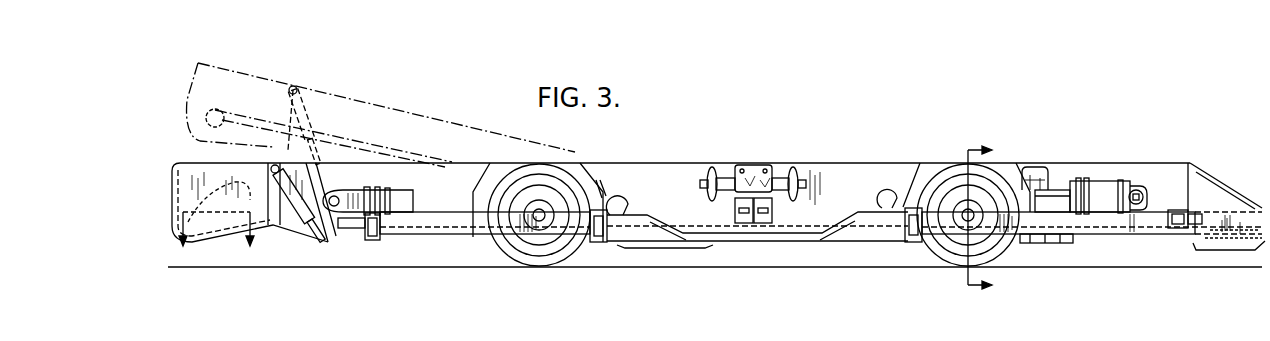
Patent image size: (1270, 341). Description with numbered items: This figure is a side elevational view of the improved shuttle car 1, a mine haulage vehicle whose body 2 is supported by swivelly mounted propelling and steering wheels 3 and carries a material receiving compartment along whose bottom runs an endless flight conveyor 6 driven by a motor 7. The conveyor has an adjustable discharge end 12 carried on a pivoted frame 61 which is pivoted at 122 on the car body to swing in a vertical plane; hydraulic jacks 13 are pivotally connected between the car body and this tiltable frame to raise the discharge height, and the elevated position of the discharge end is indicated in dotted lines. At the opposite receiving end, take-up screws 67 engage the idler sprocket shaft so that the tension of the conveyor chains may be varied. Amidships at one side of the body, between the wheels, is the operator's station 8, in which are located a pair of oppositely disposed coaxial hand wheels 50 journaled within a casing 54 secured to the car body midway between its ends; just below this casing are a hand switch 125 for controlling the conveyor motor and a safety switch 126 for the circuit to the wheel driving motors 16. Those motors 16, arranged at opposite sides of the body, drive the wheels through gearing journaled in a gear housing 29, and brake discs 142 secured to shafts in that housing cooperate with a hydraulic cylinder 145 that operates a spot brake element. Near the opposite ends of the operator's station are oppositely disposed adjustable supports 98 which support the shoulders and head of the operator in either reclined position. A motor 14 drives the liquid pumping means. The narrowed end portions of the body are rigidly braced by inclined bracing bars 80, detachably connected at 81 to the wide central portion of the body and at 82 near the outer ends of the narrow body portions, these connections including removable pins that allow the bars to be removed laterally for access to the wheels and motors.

The shuttle car 1 is at (808, 158).
The body 2 is at (690, 162).
The propelling and steering wheels 3 is at (508, 253).
The endless flight conveyor 6 is at (216, 239).
The motor 7 is at (986, 219).
The operator's station 8 is at (818, 190).
The adjustable discharge end 12 is at (195, 85).
The hydraulic jacks 13 is at (326, 155).
The motor 14 is at (372, 190).
The motors 16 is at (1100, 181).
The gear housing 29 is at (1056, 190).
The hand wheels 50 is at (717, 168).
The casing 54 is at (752, 166).
The pivoted frame 61 is at (188, 170).
The take-up screws 67 is at (1232, 236).
The bracing bars 80 is at (432, 234).
The detachable connections 81 is at (598, 243).
The detachable connections 82 is at (375, 242).
The adjustable supports 98 is at (625, 196).
The pivot 122 is at (602, 186).
The hand switch 125 is at (745, 224).
The safety switch 126 is at (766, 224).
The brake discs 142 is at (1030, 196).
The hydraulic cylinder 145 is at (1040, 167).